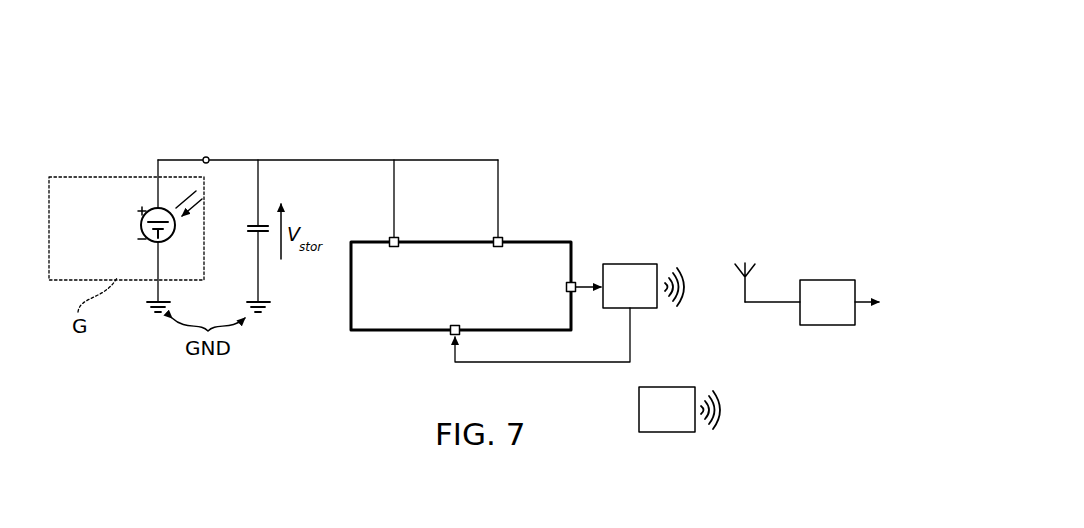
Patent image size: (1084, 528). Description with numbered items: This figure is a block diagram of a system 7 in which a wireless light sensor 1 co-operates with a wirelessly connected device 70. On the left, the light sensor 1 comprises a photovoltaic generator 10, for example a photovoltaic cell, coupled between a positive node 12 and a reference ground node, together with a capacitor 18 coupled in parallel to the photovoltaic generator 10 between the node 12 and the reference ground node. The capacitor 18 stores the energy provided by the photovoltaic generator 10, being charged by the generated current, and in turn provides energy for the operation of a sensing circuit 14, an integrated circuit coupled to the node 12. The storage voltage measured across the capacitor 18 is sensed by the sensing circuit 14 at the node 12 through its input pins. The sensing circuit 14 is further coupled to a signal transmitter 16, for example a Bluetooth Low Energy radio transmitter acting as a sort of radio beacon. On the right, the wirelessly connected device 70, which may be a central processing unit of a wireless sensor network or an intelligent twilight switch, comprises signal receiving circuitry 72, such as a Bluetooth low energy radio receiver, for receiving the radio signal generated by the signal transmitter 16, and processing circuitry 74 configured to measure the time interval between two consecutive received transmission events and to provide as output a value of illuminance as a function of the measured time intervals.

The wireless light sensor 1 is at (548, 179).
The system 7 is at (723, 171).
The photovoltaic generator 10 is at (128, 234).
The node 12 is at (203, 158).
The sensing circuit 14 is at (463, 247).
The signal transmitter 16 is at (569, 313).
The capacitor 18 is at (250, 239).
The wirelessly connected device 70 is at (804, 251).
The signal receiving circuitry 72 is at (746, 316).
The processing circuitry 74 is at (827, 302).